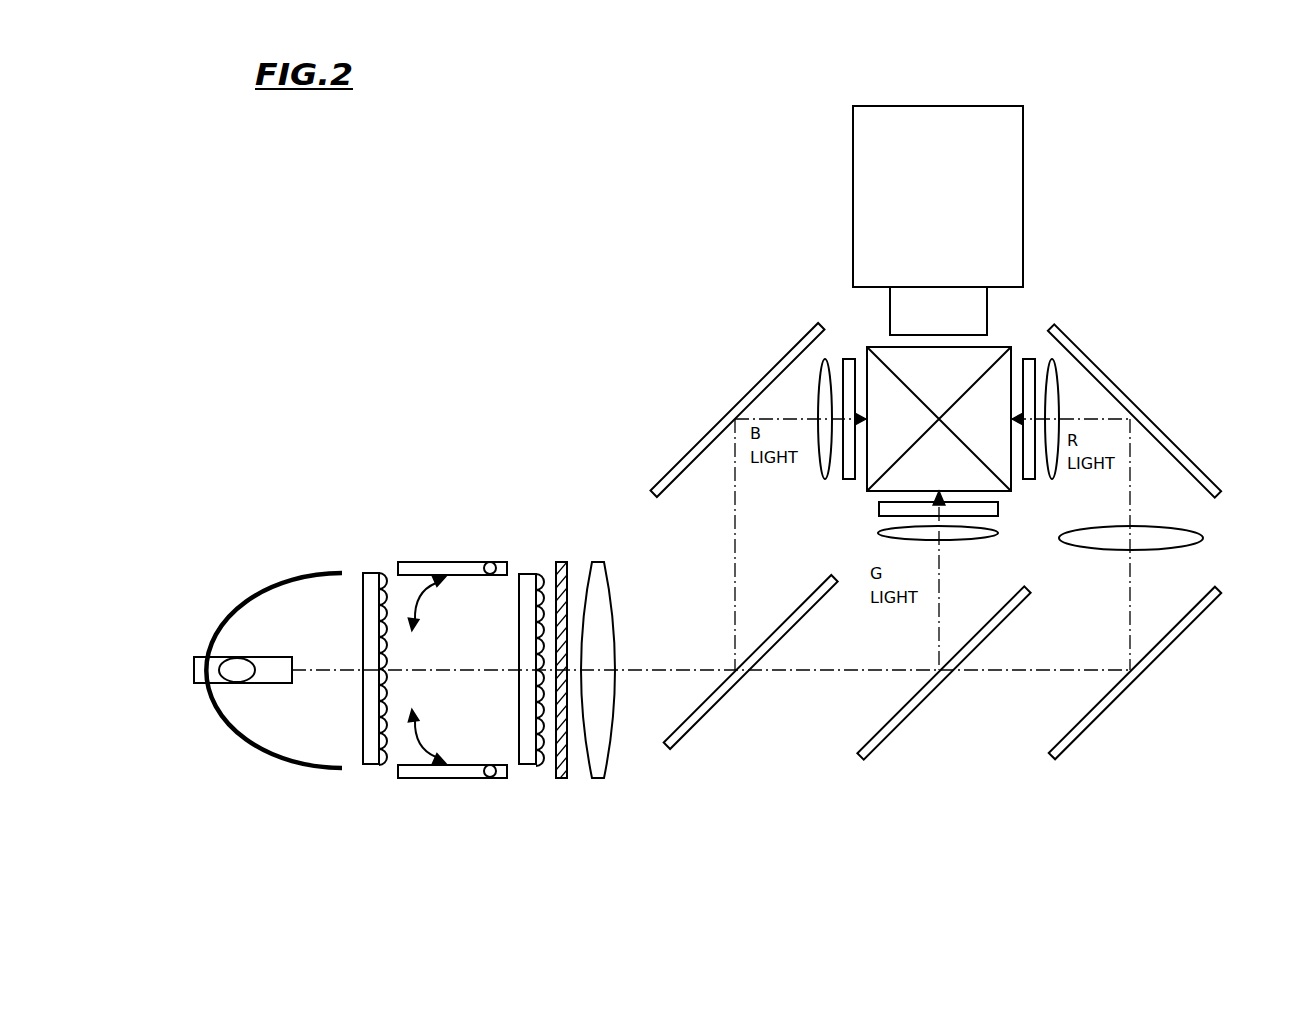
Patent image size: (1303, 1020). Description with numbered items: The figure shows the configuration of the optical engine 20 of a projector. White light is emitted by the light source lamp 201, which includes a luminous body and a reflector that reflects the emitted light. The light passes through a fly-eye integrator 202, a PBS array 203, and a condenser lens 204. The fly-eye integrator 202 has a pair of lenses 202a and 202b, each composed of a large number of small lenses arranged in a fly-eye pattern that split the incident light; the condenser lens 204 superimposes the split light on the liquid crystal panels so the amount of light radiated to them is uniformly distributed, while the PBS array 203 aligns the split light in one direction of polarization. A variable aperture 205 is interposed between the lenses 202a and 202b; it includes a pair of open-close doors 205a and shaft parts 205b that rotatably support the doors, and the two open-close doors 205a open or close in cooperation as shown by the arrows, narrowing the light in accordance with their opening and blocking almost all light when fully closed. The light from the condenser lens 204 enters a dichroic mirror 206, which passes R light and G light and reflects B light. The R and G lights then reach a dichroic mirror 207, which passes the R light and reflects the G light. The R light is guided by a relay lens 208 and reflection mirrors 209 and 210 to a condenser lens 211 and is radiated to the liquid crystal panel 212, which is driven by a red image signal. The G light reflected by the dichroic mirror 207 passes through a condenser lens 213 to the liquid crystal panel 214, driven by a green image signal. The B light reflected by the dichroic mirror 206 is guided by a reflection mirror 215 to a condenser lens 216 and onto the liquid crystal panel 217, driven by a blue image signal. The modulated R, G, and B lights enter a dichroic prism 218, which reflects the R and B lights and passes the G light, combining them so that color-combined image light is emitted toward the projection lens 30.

The optical engine 20 is at (627, 385).
The projection lens 30 is at (1035, 203).
The light source lamp 201 is at (257, 585).
The fly-eye integrator 202 is at (456, 657).
The lens 202a is at (375, 767).
The lens 202b is at (533, 767).
The PBS array 203 is at (560, 563).
The condenser lens 204 is at (615, 632).
The variable aperture 205 is at (491, 661).
The open-close doors 205a is at (470, 561).
The shaft parts 205b is at (491, 562).
The dichroic mirror 206 is at (712, 708).
The dichroic mirror 207 is at (928, 697).
The relay lens 208 is at (1202, 538).
The reflection mirror 209 is at (1167, 650).
The reflection mirror 210 is at (1154, 418).
The condenser lens 211 is at (1058, 400).
The liquid crystal panel 212 is at (1027, 358).
The condenser lens 213 is at (902, 530).
The liquid crystal panel 214 is at (1000, 508).
The reflection mirror 215 is at (728, 412).
The condenser lens 216 is at (820, 397).
The liquid crystal panel 217 is at (849, 358).
The dichroic prism 218 is at (880, 347).